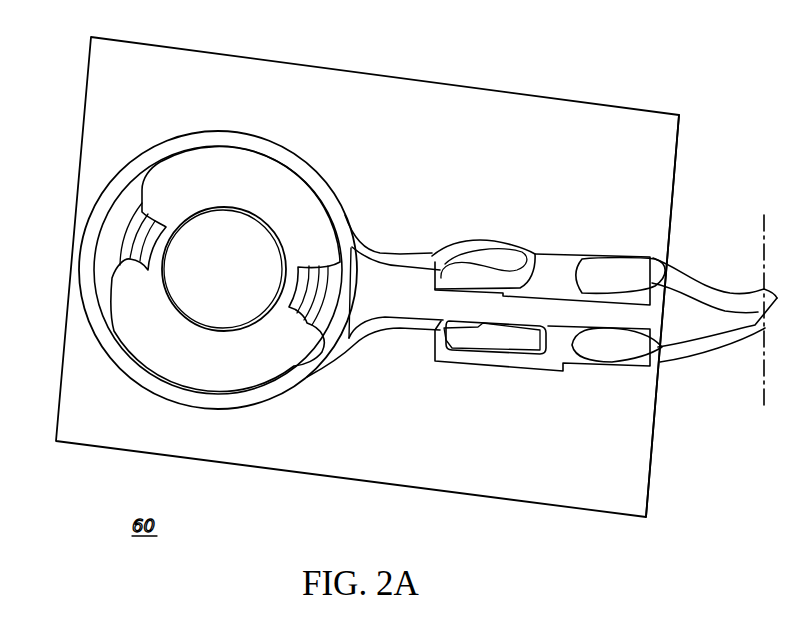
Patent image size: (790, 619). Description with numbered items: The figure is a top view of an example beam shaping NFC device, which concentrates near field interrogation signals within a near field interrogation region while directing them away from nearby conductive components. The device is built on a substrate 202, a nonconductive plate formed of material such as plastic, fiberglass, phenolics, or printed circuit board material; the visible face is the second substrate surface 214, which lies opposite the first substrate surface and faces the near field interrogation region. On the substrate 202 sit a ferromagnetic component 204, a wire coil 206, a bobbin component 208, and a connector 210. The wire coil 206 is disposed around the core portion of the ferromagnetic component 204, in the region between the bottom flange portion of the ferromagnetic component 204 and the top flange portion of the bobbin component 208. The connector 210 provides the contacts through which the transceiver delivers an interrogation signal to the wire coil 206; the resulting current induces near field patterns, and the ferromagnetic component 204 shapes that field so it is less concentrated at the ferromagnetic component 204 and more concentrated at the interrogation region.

The substrate 202 is at (203, 58).
The ferromagnetic component 204 is at (177, 137).
The wire coil 206 is at (120, 240).
The bobbin component 208 is at (165, 348).
The connector 210 is at (641, 262).
The second substrate surface 214 is at (672, 142).